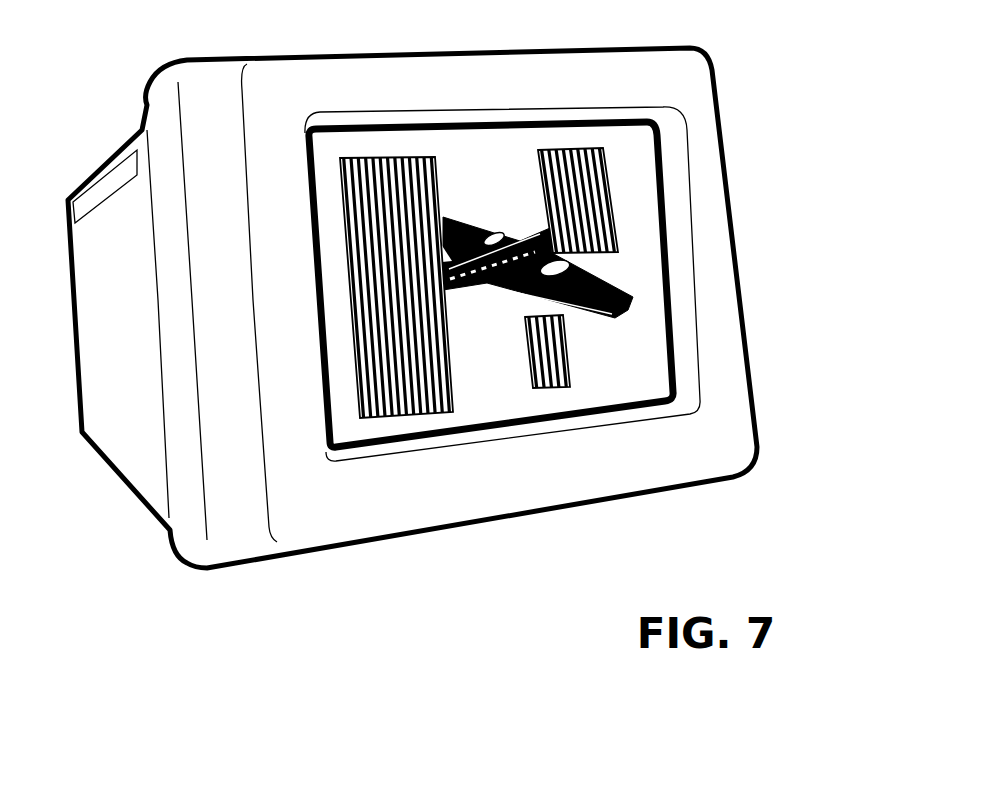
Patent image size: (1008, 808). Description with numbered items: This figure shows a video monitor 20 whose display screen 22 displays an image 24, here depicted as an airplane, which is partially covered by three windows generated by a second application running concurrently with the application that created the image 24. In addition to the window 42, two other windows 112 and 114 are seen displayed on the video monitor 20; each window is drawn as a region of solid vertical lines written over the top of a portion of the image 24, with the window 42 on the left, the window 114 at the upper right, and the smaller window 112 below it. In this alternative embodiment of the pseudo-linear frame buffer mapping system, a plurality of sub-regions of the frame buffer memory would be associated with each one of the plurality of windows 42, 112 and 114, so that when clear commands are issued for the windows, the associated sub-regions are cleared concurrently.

The video monitor 20 is at (712, 70).
The display screen 22 is at (660, 147).
The image 24 is at (633, 303).
The window 42 is at (452, 350).
The window 112 is at (567, 340).
The window 114 is at (618, 215).